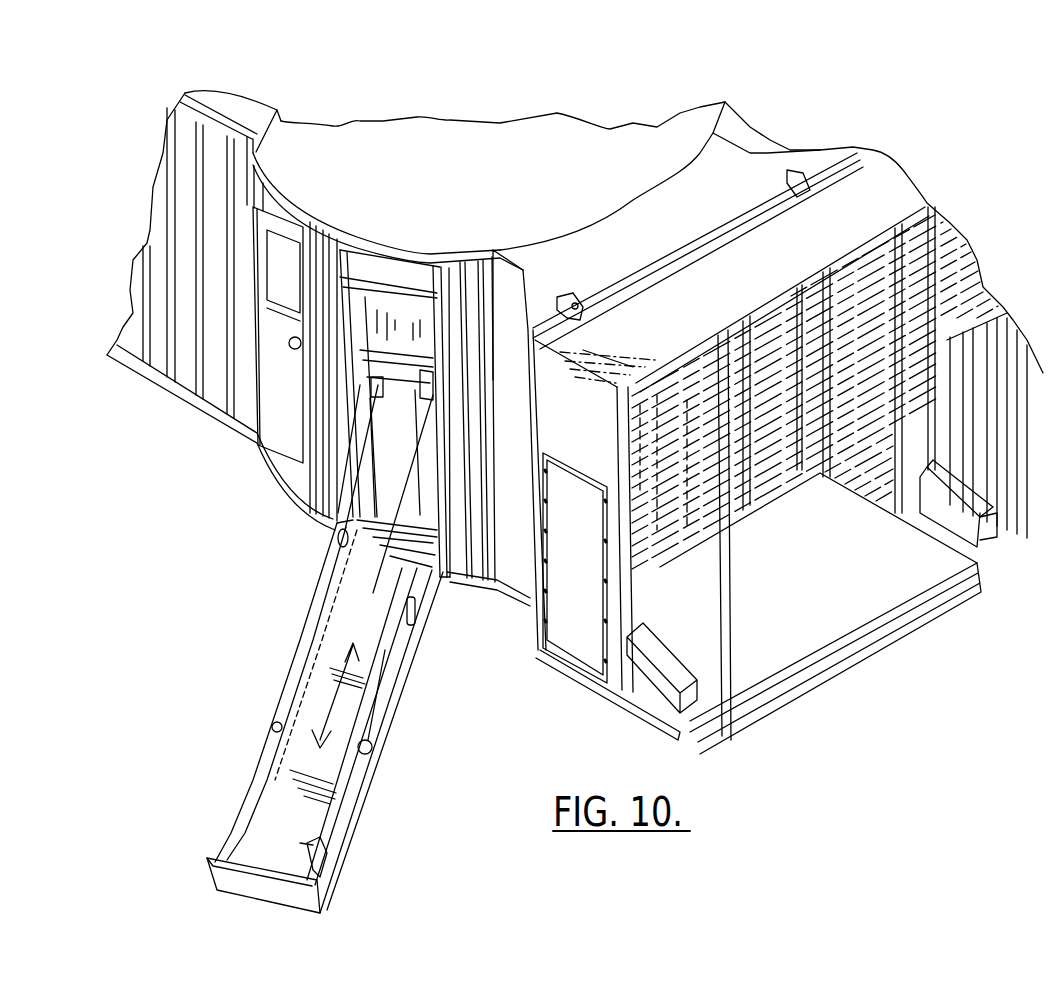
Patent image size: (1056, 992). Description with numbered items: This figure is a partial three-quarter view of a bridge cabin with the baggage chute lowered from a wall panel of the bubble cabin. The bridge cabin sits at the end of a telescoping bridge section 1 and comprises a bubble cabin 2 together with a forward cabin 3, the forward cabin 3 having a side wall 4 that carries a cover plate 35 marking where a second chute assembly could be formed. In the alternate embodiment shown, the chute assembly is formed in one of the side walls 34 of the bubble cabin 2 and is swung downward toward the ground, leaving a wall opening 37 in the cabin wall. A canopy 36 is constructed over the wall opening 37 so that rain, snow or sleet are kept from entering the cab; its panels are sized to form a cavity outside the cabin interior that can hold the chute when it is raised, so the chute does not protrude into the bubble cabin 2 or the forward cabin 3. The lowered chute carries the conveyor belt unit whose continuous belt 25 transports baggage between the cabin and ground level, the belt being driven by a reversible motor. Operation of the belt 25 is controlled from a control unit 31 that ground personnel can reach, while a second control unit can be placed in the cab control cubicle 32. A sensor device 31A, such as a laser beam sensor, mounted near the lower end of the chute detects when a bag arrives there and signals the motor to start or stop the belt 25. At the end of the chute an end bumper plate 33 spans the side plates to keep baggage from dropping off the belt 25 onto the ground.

The telescoping bridge section 1 is at (315, 307).
The bubble cabin 2 is at (225, 80).
The forward cabin 3 is at (903, 167).
The side wall 4 is at (570, 413).
The continuous belt 25 is at (307, 755).
The control unit 31 is at (420, 600).
The sensor device 31A is at (323, 850).
The cab control cubicle 32 is at (787, 463).
The end bumper plate 33 is at (207, 860).
The side wall 34 is at (327, 467).
The cover plate 35 is at (580, 613).
The canopy 36 is at (397, 262).
The wall opening 37 is at (420, 447).